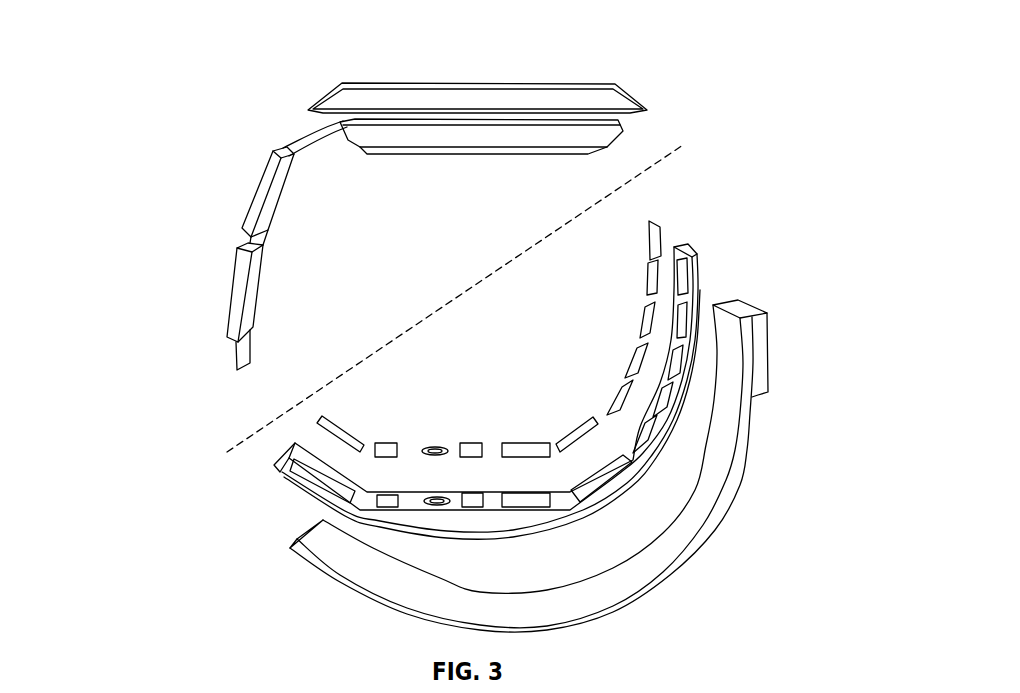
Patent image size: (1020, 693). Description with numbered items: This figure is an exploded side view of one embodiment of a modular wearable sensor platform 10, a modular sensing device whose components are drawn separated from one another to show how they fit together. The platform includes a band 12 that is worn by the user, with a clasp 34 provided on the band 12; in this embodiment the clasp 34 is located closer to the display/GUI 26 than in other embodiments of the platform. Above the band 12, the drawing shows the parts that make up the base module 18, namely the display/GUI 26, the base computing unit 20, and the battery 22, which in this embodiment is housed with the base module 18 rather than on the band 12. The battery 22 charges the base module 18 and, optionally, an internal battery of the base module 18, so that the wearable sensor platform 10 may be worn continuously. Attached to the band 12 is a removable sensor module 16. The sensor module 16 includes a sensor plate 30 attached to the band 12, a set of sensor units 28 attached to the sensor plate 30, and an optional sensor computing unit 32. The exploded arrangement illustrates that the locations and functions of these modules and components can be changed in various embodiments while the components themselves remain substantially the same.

The modular wearable sensor platform 10 is at (467, 338).
The band 12 is at (749, 458).
The sensor module 16 is at (250, 511).
The base module 18 is at (219, 279).
The base computing unit 20 is at (238, 248).
The battery 22 is at (620, 130).
The display/GUI 26 is at (327, 97).
The sensor units 28 is at (671, 232).
The sensor plate 30 is at (698, 303).
The sensor computing unit 32 is at (427, 517).
The clasp 34 is at (767, 350).